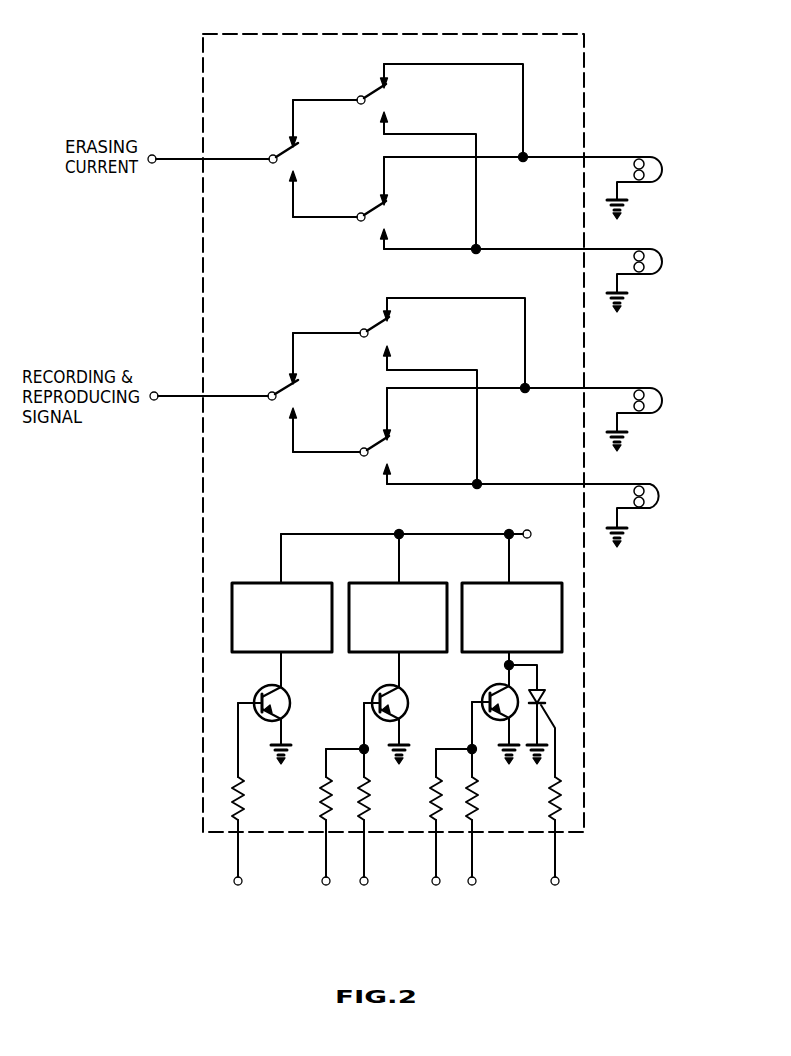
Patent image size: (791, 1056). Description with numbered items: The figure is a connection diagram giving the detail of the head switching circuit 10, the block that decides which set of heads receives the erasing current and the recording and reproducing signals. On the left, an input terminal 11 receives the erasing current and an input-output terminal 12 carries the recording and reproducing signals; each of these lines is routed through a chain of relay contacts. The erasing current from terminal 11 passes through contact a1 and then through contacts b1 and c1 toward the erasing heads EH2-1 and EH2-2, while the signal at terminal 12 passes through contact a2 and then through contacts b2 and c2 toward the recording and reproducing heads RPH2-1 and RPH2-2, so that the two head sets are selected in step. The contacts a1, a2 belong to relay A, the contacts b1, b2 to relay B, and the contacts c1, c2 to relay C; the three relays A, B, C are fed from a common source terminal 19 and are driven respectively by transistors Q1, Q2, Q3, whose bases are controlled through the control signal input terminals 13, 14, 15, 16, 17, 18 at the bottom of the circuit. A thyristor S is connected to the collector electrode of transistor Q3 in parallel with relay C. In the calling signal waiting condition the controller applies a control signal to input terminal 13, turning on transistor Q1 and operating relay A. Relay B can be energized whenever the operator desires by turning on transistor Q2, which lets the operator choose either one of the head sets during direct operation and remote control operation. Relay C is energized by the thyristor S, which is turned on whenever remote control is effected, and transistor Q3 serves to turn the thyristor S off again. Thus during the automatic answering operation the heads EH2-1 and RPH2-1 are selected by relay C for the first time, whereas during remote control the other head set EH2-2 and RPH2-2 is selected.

The head switching circuit 10 is at (513, 34).
The input terminal for the erasing current 11 is at (155, 155).
The input-output terminal for the recording and reproducing signals 12 is at (157, 392).
The control signal input terminal 13 is at (241, 885).
The control signal input terminal 14 is at (329, 885).
The control signal input terminal 15 is at (367, 885).
The control signal input terminal 16 is at (439, 885).
The control signal input terminal 17 is at (475, 885).
The control signal input terminal 18 is at (558, 885).
The source terminal 19 is at (530, 530).
The contact of relay A a1 is at (286, 152).
The contact of relay B b1 is at (369, 92).
The contact of relay C c1 is at (369, 210).
The contact of relay A a2 is at (285, 390).
The contact of relay B b2 is at (372, 326).
The contact of relay C c2 is at (372, 445).
The relay A is at (299, 590).
The relay B is at (420, 590).
The relay C is at (532, 590).
The transistor Q1 is at (256, 696).
The transistor Q2 is at (376, 696).
The transistor Q3 is at (491, 696).
The thyristor S is at (547, 698).
The erasing head EH2-1 is at (662, 187).
The erasing head EH2-2 is at (663, 280).
The recording and reproducing head RPH2-1 is at (667, 419).
The recording and reproducing head RPH2-2 is at (668, 515).